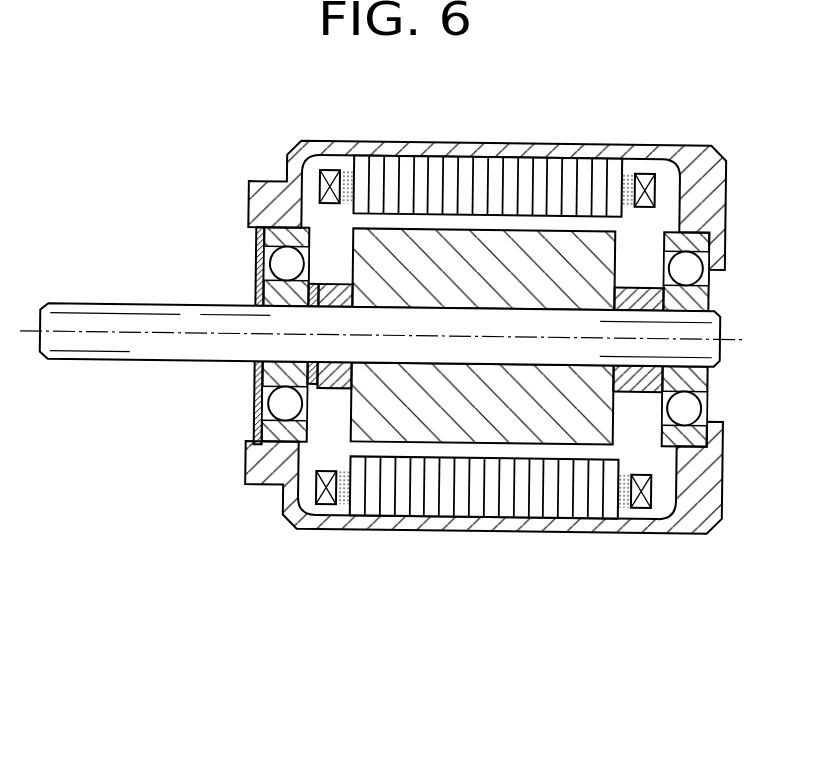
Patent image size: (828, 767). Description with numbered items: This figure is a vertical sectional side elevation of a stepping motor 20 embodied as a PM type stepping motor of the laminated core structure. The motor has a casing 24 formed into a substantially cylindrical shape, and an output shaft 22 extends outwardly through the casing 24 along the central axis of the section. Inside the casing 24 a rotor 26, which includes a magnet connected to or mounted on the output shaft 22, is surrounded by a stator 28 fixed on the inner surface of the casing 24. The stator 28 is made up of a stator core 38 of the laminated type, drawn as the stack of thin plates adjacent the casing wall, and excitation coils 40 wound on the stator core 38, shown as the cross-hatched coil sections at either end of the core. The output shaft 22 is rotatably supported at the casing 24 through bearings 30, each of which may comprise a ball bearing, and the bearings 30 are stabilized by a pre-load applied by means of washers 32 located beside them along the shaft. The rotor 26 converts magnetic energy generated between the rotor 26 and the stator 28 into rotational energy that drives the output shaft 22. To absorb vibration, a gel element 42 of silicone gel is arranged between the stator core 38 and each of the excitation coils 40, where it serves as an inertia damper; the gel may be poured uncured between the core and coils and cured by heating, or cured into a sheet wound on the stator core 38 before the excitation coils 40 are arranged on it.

The stepping motor 20 is at (244, 137).
The output shaft 22 is at (145, 348).
The casing 24 is at (517, 150).
The rotor 26 is at (497, 284).
The stator 28 is at (388, 166).
The bearings 30 is at (273, 288).
The washers 32 is at (312, 380).
The stator core 38 is at (447, 163).
The excitation coils 40 is at (645, 170).
The gel element 42 is at (345, 206).